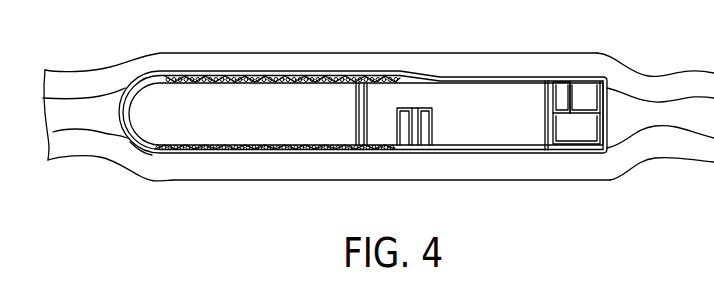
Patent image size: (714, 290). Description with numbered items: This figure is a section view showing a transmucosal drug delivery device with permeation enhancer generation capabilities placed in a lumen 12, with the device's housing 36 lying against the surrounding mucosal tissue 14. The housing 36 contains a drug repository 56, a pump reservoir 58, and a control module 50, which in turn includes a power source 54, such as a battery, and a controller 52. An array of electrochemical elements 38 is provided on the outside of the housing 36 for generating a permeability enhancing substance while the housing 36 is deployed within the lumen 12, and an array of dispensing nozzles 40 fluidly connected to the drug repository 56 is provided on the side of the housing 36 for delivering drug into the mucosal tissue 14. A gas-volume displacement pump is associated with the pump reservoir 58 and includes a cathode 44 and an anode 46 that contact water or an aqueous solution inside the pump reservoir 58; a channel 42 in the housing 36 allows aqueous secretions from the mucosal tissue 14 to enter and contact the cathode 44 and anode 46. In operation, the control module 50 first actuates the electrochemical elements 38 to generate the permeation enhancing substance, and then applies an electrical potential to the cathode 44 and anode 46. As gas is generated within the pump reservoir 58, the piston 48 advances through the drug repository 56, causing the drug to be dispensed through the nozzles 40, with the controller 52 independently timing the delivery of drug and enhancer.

The lumen 12 is at (622, 115).
The mucosal tissue 14 is at (105, 85).
The housing 36 is at (128, 150).
The array of electrochemical elements 38 is at (198, 71).
The array of dispensing nozzles 40 is at (190, 156).
The channel 42 is at (415, 128).
The cathode 44 is at (405, 142).
The anode 46 is at (425, 142).
The piston 48 is at (367, 82).
The control module 50 is at (562, 92).
The controller 52 is at (585, 92).
The power source 54 is at (577, 140).
The drug repository 56 is at (267, 93).
The pump reservoir 58 is at (478, 92).